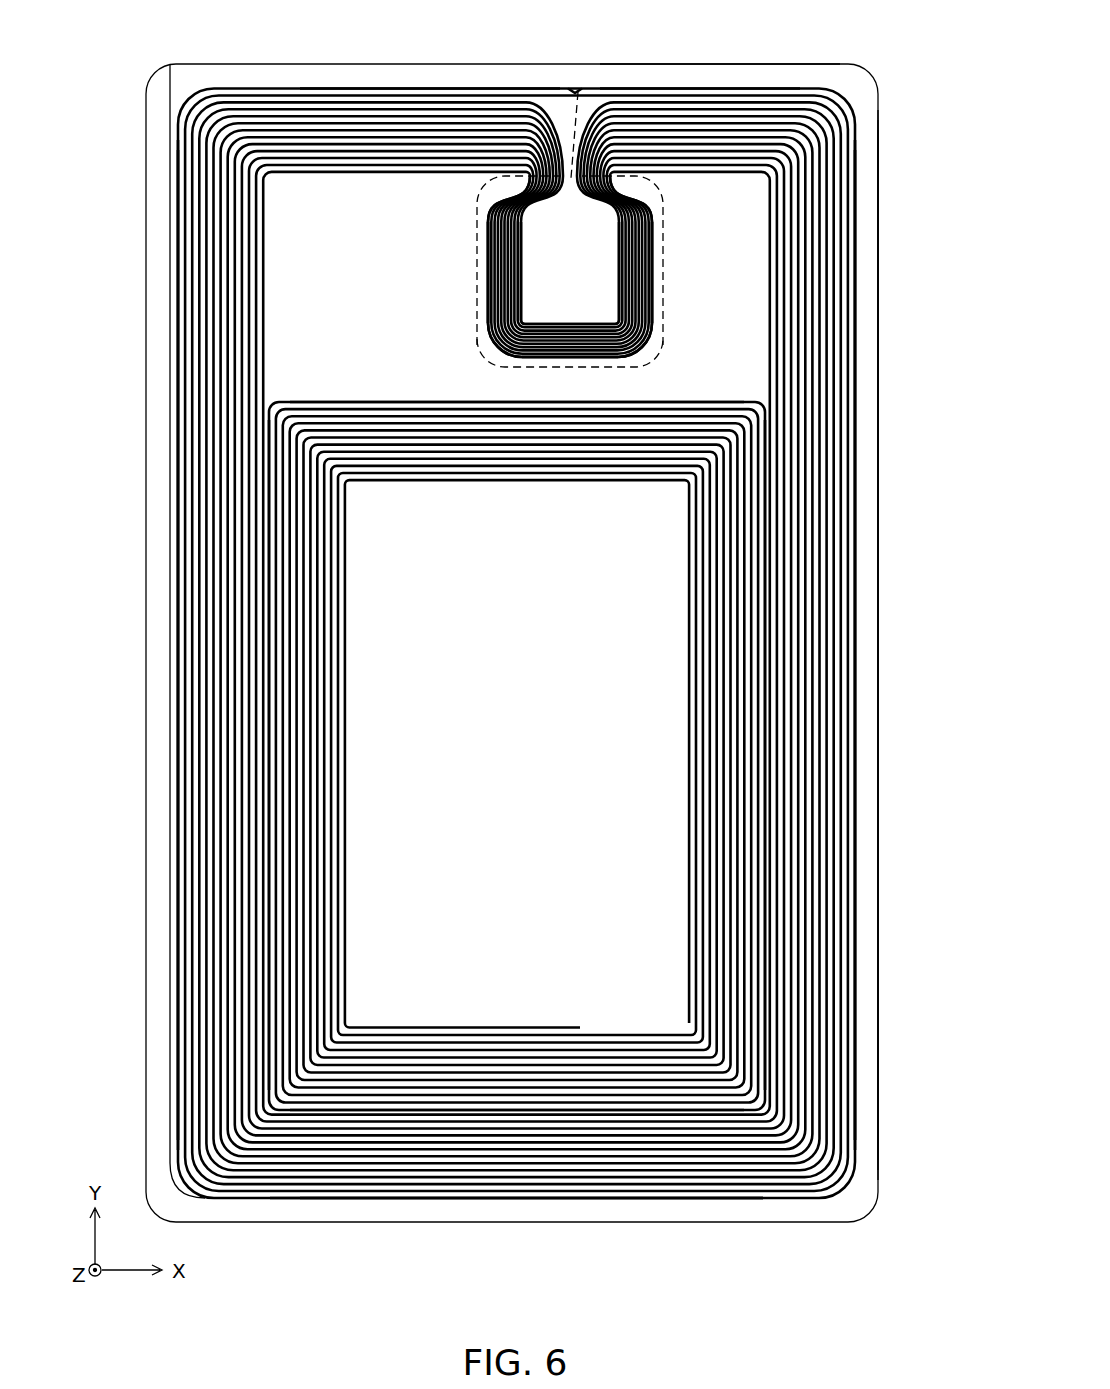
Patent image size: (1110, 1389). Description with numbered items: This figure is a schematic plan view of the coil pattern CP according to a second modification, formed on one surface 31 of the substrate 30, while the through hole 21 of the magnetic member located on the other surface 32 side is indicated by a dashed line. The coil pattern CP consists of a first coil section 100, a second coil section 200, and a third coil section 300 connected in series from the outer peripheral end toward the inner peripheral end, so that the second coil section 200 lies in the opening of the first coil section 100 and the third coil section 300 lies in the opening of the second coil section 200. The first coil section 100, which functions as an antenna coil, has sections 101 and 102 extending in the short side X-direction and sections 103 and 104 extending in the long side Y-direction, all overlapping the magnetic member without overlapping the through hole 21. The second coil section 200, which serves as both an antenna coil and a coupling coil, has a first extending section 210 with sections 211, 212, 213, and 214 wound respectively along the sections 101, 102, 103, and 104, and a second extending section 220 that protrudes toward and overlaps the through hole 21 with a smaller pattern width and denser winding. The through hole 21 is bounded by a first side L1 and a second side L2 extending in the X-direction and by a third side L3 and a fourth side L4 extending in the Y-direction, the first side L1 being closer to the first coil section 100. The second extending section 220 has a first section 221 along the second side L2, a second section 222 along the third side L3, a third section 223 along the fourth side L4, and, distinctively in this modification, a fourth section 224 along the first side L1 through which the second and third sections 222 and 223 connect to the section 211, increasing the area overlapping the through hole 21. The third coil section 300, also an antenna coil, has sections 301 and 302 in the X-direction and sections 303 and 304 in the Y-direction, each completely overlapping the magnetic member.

The first coil section 100 is at (357, 68).
The section of the first coil section 101 is at (576, 90).
The section of the first coil section 102 is at (552, 1107).
The section of the first coil section 103 is at (190, 633).
The section of the first coil section 104 is at (832, 633).
The coil pattern CP is at (790, 81).
The first side of the through hole L1 is at (598, 86).
The second side of the through hole L2 is at (535, 372).
The third side of the through hole L3 is at (664, 300).
The fourth side of the through hole L4 is at (478, 305).
The second coil section 200 is at (511, 660).
The first extending section 210 is at (511, 660).
The section of the first extending section 211 is at (705, 180).
The section of the first extending section 212 is at (513, 1127).
The section of the first extending section 213 is at (270, 706).
The section of the first extending section 214 is at (840, 706).
The second extending section 220 is at (546, 288).
The first section 221 is at (557, 358).
The second section 222 is at (655, 242).
The third section 223 is at (485, 242).
The fourth section 224 is at (605, 220).
The through hole 21 is at (613, 299).
The substrate 30 is at (880, 378).
The one surface of the substrate 31 is at (878, 420).
The other surface of the substrate 32 is at (873, 455).
The third coil section 300 is at (519, 755).
The section of the third coil section 301 is at (533, 400).
The section of the third coil section 302 is at (532, 1070).
The section of the third coil section 303 is at (355, 746).
The section of the third coil section 304 is at (770, 746).